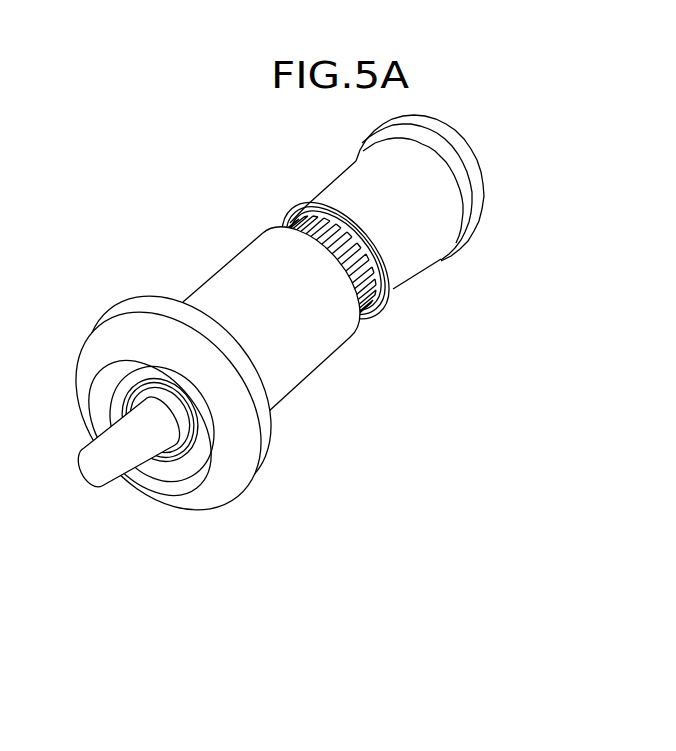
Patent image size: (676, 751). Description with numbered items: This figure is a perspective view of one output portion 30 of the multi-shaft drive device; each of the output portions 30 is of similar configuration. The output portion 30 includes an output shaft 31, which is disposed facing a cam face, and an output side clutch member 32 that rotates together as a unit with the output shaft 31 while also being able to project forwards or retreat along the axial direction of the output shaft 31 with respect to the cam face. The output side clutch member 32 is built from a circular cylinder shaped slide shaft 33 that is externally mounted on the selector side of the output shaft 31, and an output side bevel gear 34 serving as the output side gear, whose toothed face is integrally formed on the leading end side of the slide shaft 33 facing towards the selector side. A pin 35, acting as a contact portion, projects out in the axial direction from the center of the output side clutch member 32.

The output portion 30 is at (261, 335).
The output shaft 31 is at (410, 257).
The output side clutch member 32 is at (303, 354).
The slide shaft 33 is at (213, 284).
The output side bevel gear 34 is at (224, 479).
The pin 35 is at (88, 453).